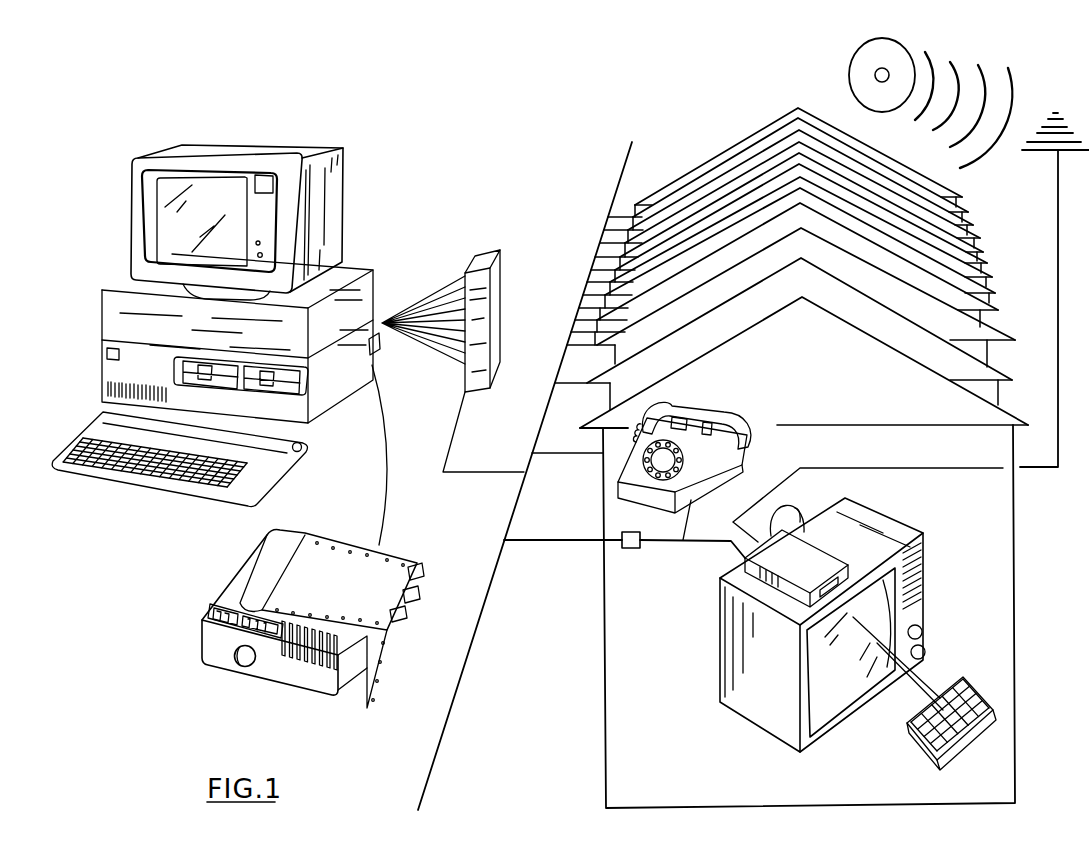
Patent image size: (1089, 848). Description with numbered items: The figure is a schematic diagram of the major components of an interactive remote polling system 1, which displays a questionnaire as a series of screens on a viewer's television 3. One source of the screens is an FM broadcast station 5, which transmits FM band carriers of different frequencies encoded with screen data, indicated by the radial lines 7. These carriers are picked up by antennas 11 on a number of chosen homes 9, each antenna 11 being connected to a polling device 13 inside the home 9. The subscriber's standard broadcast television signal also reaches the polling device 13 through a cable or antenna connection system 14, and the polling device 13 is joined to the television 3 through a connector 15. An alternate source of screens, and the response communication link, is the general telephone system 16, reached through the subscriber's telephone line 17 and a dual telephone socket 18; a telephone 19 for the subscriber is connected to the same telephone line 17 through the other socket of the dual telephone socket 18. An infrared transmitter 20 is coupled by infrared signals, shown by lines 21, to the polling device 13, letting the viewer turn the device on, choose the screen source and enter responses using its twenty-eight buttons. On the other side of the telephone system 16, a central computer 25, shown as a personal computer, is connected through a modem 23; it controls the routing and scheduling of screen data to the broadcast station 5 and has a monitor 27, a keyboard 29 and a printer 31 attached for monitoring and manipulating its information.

The interactive remote polling system 1 is at (513, 153).
The television 3 is at (892, 525).
The FM broadcast station 5 is at (849, 75).
The radial lines 7 is at (950, 138).
The homes 9 is at (968, 245).
The antenna 11 is at (1057, 160).
The polling device 13 is at (785, 565).
The cable or antenna connection system 14 is at (764, 520).
The connector 15 is at (805, 514).
The general telephone system 16 is at (443, 742).
The telephone line 17 is at (570, 546).
The dual telephone socket 18 is at (636, 550).
The telephone 19 is at (720, 412).
The infrared transmitter 20 is at (963, 683).
The infrared signal lines 21 is at (927, 680).
The modem 23 is at (478, 253).
The central computer 25 is at (118, 280).
The monitor 27 is at (343, 175).
The keyboard 29 is at (103, 472).
The printer 31 is at (305, 680).